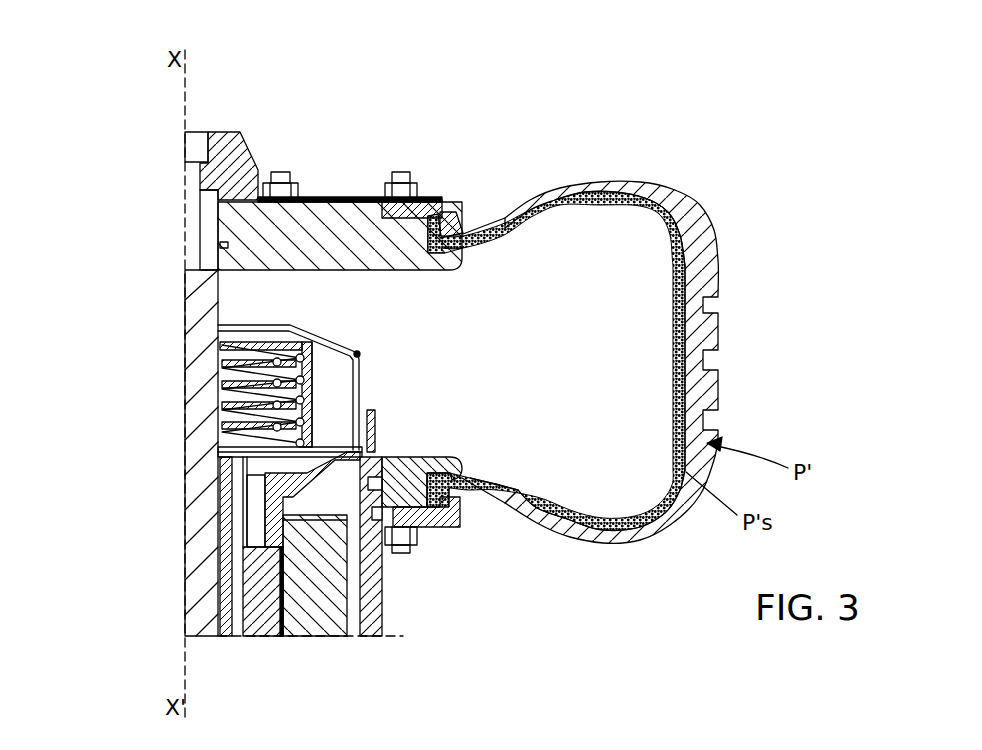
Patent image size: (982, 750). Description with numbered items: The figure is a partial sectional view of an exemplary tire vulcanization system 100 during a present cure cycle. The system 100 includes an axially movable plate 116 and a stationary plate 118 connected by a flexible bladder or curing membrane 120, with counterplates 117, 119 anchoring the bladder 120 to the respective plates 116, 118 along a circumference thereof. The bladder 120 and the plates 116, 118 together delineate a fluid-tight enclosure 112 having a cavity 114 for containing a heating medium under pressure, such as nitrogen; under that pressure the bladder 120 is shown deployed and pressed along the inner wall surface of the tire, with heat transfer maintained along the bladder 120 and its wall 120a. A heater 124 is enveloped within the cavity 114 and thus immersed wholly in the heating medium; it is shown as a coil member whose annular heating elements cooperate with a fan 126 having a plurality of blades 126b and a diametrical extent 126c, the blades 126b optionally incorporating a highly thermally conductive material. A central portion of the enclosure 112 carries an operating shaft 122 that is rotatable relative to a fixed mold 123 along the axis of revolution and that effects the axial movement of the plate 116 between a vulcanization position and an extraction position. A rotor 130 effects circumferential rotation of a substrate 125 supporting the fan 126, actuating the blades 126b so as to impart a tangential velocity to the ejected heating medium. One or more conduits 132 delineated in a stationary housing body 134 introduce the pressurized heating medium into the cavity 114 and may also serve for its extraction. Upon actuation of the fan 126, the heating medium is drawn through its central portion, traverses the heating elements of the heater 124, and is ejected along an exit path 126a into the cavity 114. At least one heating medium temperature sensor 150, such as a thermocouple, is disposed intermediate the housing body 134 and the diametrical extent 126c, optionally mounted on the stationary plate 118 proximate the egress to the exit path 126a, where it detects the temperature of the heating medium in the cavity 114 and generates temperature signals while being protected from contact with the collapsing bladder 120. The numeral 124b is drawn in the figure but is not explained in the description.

The tire vulcanization system 100 is at (256, 100).
The fluid-tight enclosure 112 is at (467, 235).
The cavity 114 is at (563, 354).
The axially movable plate 116 is at (320, 213).
The counterplate 117 is at (358, 347).
The stationary plate 118 is at (398, 482).
The counterplate 119 is at (434, 530).
The bladder 120 is at (489, 503).
The bladder wall 120a is at (497, 480).
The operating shaft 122 is at (200, 595).
The fixed mold 123 is at (226, 622).
The heater 124 is at (225, 345).
The spring elements 124b is at (225, 378).
The substrate 125 is at (287, 488).
The fan 126 is at (332, 358).
The exit path 126a is at (447, 447).
The fan blades 126b is at (220, 418).
The diametrical extent 126c is at (440, 217).
The rotor 130 is at (265, 620).
The conduit 132 is at (352, 622).
The stationary housing body 134 is at (370, 615).
The heating medium temperature sensor 150 is at (392, 413).